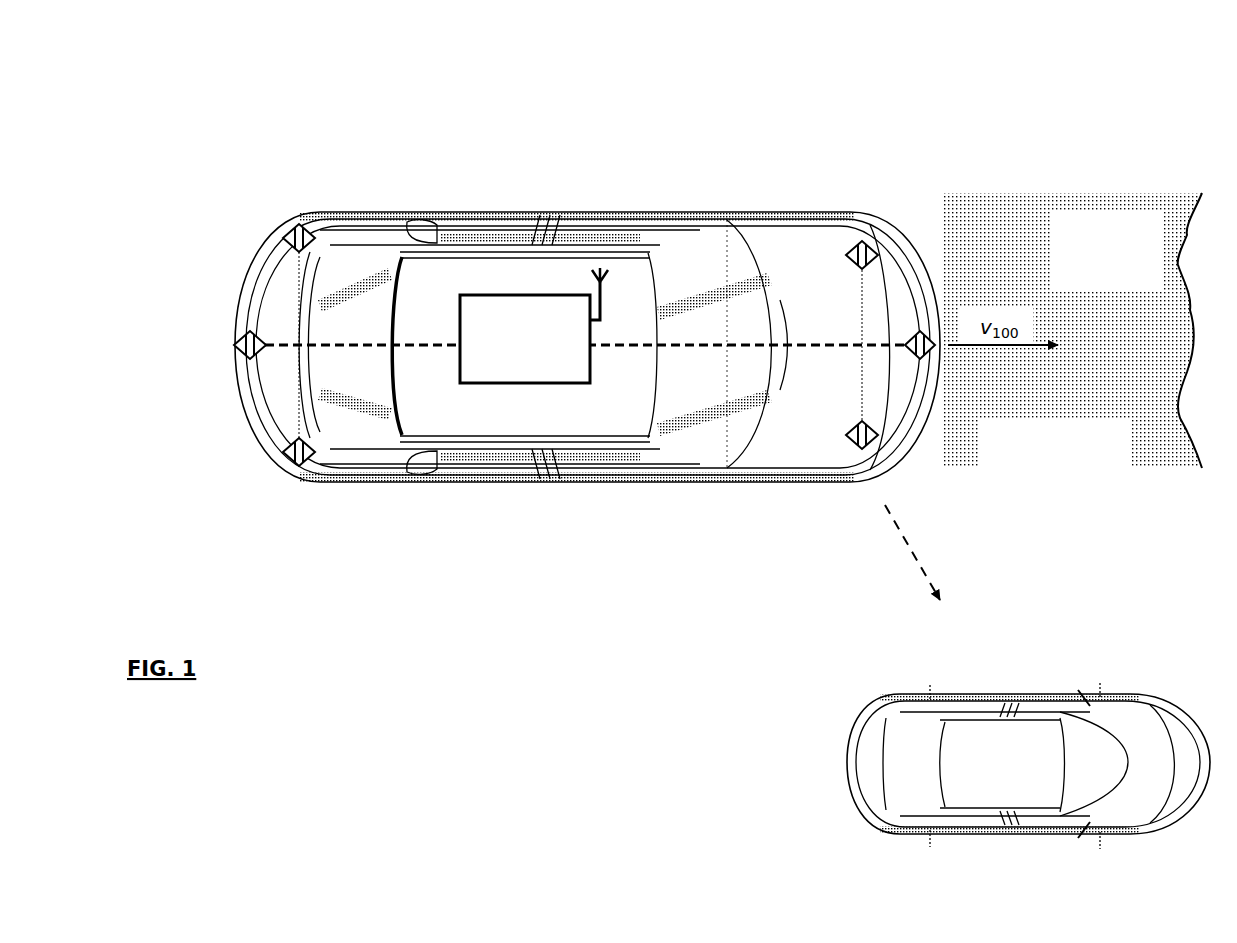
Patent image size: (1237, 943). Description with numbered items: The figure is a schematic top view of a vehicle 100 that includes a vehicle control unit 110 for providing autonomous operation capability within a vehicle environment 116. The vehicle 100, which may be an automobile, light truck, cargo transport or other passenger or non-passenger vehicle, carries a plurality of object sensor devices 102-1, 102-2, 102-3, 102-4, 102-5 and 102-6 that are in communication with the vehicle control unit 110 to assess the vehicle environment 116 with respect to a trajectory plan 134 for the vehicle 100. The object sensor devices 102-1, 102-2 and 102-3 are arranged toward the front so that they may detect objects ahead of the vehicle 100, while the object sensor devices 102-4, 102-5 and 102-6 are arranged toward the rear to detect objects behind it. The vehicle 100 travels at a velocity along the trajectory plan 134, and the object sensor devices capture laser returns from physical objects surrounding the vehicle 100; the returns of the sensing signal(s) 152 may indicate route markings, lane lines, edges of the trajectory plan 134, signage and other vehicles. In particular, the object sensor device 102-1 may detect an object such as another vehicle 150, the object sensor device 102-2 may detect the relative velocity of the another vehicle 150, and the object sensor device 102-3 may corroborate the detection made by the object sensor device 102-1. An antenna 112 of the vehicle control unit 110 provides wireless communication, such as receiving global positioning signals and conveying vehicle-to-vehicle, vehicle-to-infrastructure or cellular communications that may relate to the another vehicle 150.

The vehicle 100 is at (773, 212).
The object sensor device 102-1 is at (921, 357).
The object sensor device 102-2 is at (855, 265).
The object sensor device 102-3 is at (857, 423).
The object sensor device 102-4 is at (299, 224).
The object sensor device 102-5 is at (243, 334).
The object sensor device 102-6 is at (283, 448).
The vehicle control unit 110 is at (532, 390).
The antenna 112 is at (606, 312).
The vehicle environment 116 is at (1028, 137).
The trajectory plan 134 is at (1072, 330).
The another vehicle 150 is at (1048, 695).
The sensing signal(s) 152 is at (928, 577).